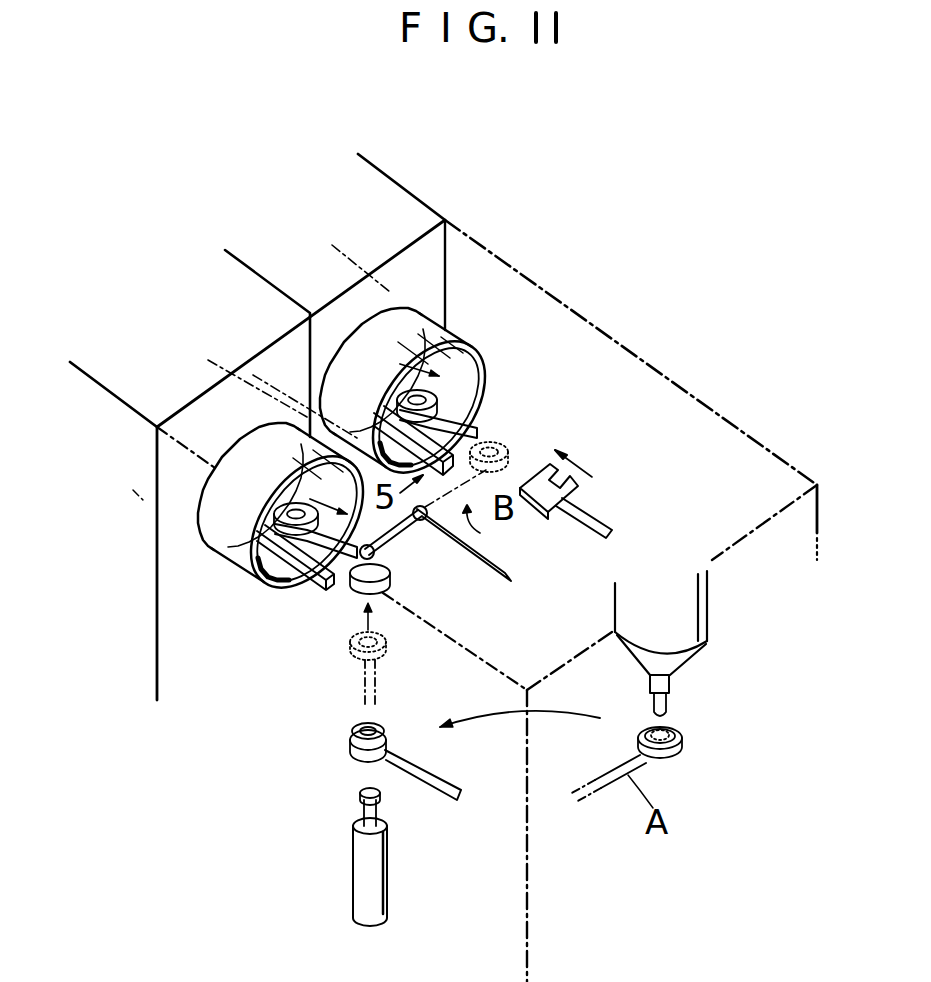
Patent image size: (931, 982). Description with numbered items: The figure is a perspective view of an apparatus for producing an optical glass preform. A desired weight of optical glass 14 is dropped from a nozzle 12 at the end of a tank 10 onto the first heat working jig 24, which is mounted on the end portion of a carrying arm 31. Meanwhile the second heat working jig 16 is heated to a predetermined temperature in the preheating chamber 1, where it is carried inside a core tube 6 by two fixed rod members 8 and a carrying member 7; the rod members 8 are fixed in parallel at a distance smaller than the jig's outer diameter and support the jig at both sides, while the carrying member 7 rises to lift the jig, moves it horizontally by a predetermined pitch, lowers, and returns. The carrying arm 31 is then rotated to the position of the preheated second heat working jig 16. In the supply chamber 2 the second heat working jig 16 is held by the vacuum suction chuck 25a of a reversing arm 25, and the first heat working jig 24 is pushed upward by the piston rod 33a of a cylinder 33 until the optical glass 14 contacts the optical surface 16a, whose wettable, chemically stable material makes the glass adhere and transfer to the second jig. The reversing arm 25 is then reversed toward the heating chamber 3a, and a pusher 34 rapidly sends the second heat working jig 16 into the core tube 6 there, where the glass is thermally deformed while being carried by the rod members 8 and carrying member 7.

The preheating chamber 1 is at (172, 452).
The supply chamber 2 is at (787, 488).
The heating chamber 3a is at (425, 258).
The core tube 6 is at (407, 325).
The carrying member 7 is at (278, 592).
The fixed rod member 8 is at (307, 593).
The tank 10 is at (672, 617).
The nozzle 12 is at (672, 682).
The optical glass 14 is at (460, 362).
The second heat working jig 16 is at (473, 407).
The optical surface 16a is at (385, 603).
The first heat working jig 24 is at (350, 742).
The reversing arm 25 is at (493, 560).
The vacuum suction chuck 25a is at (388, 568).
The carrying arm 31 is at (423, 792).
The cylinder 33 is at (360, 847).
The piston rod 33a is at (360, 812).
The pusher 34 is at (588, 510).